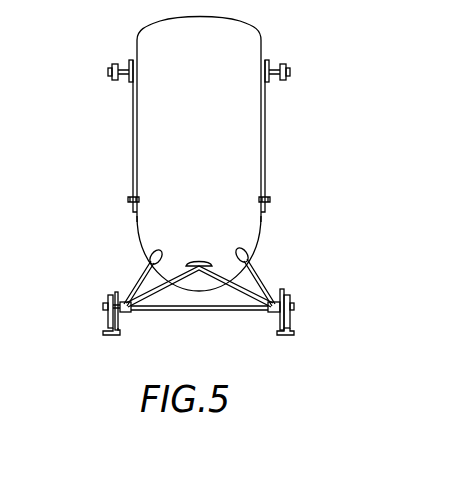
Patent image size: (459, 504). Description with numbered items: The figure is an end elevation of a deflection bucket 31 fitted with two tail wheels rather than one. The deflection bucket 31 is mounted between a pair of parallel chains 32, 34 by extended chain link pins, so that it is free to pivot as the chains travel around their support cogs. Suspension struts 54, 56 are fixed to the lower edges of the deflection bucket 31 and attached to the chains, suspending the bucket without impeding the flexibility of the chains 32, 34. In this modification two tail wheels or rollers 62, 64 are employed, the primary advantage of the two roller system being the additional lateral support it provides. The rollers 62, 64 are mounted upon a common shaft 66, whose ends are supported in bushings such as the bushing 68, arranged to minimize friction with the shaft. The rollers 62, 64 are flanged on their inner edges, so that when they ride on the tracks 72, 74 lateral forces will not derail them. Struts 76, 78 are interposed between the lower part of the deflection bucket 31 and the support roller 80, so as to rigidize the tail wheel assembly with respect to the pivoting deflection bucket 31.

The deflection bucket 31 is at (231, 35).
The chain 32 is at (112, 68).
The chain 34 is at (287, 66).
The suspension strut 54 is at (266, 150).
The suspension strut 56 is at (133, 162).
The tail wheel 62 is at (103, 307).
The tail wheel 64 is at (294, 307).
The common shaft 66 is at (190, 308).
The bushing 68 is at (279, 295).
The track 72 is at (292, 336).
The track 74 is at (113, 336).
The strut 76 is at (146, 246).
The strut 78 is at (180, 261).
The support roller 80 is at (127, 312).